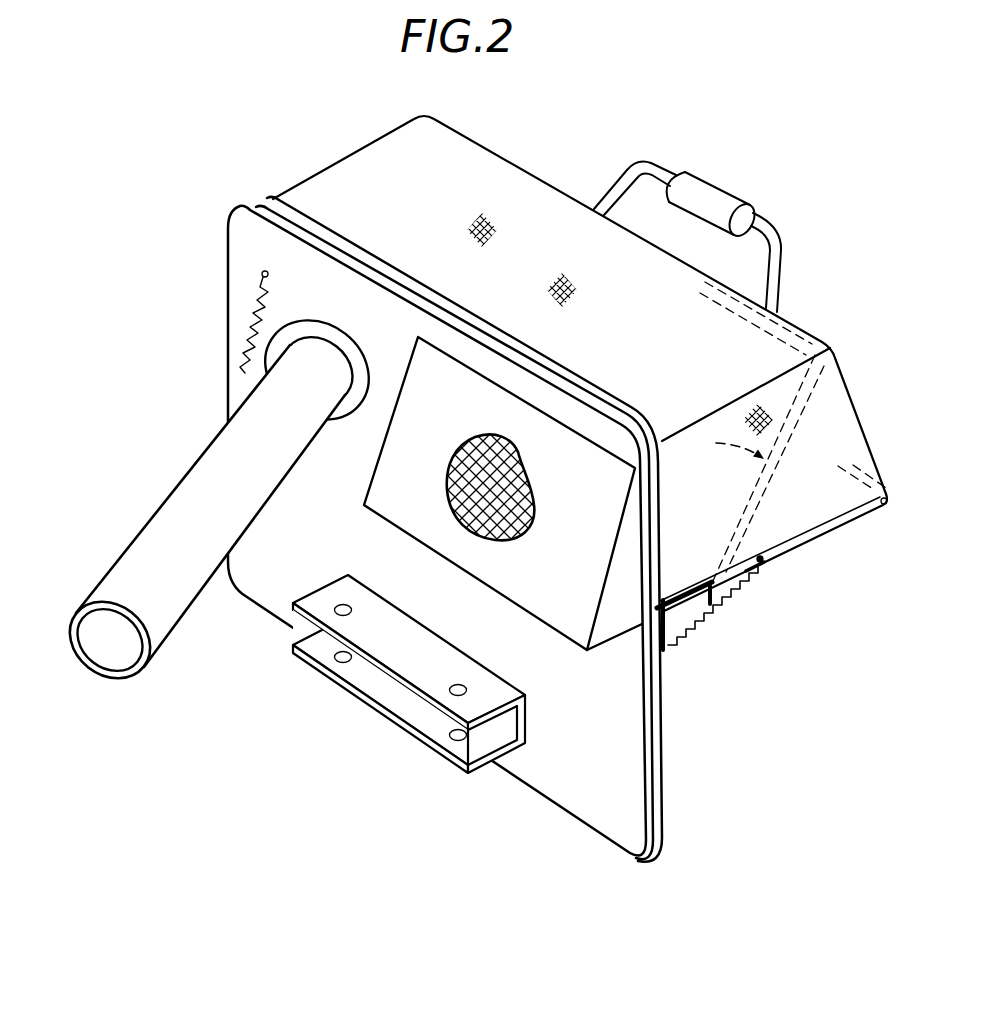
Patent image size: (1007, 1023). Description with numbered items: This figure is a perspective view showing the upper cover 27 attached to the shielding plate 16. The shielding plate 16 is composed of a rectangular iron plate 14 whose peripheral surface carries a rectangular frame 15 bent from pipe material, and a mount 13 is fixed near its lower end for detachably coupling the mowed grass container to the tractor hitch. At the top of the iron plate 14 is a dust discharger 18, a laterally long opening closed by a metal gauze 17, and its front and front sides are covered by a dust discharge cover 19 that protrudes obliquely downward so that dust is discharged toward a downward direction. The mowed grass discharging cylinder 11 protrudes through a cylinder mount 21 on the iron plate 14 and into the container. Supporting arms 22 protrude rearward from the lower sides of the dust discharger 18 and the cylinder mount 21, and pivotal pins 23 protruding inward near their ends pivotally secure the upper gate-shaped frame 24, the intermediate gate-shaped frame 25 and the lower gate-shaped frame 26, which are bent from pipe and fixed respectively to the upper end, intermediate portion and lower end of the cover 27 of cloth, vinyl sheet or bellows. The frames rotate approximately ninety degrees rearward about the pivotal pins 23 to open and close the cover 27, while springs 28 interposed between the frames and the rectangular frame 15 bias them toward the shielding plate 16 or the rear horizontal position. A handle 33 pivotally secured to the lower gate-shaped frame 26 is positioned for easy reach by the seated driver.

The mowed grass discharging cylinder 11 is at (182, 476).
The mount 13 is at (397, 658).
The rectangular iron plate 14 is at (578, 795).
The rectangular frame 15 is at (662, 757).
The shielding plate 16 is at (670, 698).
The metal gauze 17 is at (359, 555).
The dust discharger 18 is at (447, 488).
The dust discharge cover 19 is at (575, 630).
The cylinder mount 21 is at (357, 355).
The supporting arm 22 is at (680, 608).
The pivotal pin 23 is at (736, 592).
The upper gate-shaped frame 24 is at (634, 413).
The intermediate gate-shaped frame 25 is at (818, 396).
The lower gate-shaped frame 26 is at (850, 518).
The cover 27 is at (528, 192).
The spring 28 is at (234, 322).
The handle 33 is at (768, 230).